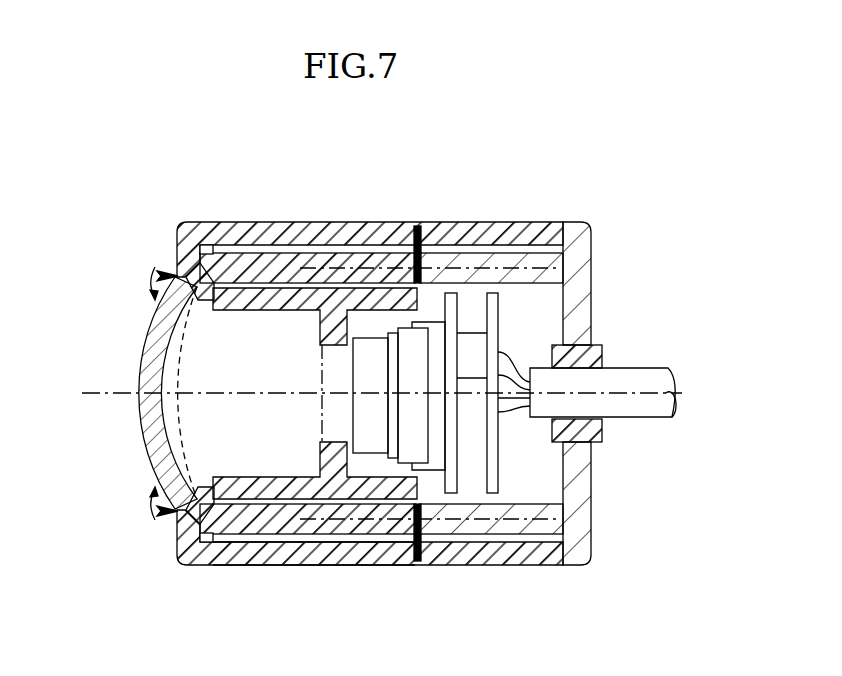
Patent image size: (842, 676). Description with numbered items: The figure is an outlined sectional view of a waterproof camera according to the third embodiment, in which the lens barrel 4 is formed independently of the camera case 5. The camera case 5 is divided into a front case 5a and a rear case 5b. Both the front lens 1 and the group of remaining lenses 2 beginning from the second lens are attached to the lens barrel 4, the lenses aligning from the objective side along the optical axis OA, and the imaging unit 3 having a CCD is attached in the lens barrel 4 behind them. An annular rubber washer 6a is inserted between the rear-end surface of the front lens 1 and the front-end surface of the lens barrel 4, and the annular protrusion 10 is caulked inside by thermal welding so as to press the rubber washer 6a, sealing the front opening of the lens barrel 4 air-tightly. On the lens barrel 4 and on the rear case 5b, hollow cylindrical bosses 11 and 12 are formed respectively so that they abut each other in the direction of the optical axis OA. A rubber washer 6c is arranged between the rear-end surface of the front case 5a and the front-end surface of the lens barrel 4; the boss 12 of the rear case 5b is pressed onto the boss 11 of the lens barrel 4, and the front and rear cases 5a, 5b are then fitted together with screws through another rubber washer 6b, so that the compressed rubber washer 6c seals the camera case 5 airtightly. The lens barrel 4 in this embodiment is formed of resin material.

The front lens 1 is at (147, 442).
The group of remaining lenses 2 is at (165, 470).
The imaging unit 3 is at (502, 310).
The lens barrel 4 is at (278, 488).
The camera case 5 is at (587, 577).
The front case 5a is at (353, 562).
The rear case 5b is at (575, 522).
The annular rubber washer 6a is at (155, 308).
The rubber washer 6b is at (413, 565).
The rubber washer 6c is at (205, 247).
The annular protrusion 10 is at (162, 276).
The cylindrical boss 11 is at (298, 258).
The cylindrical boss 12 is at (470, 262).
The optical axis OA is at (112, 390).